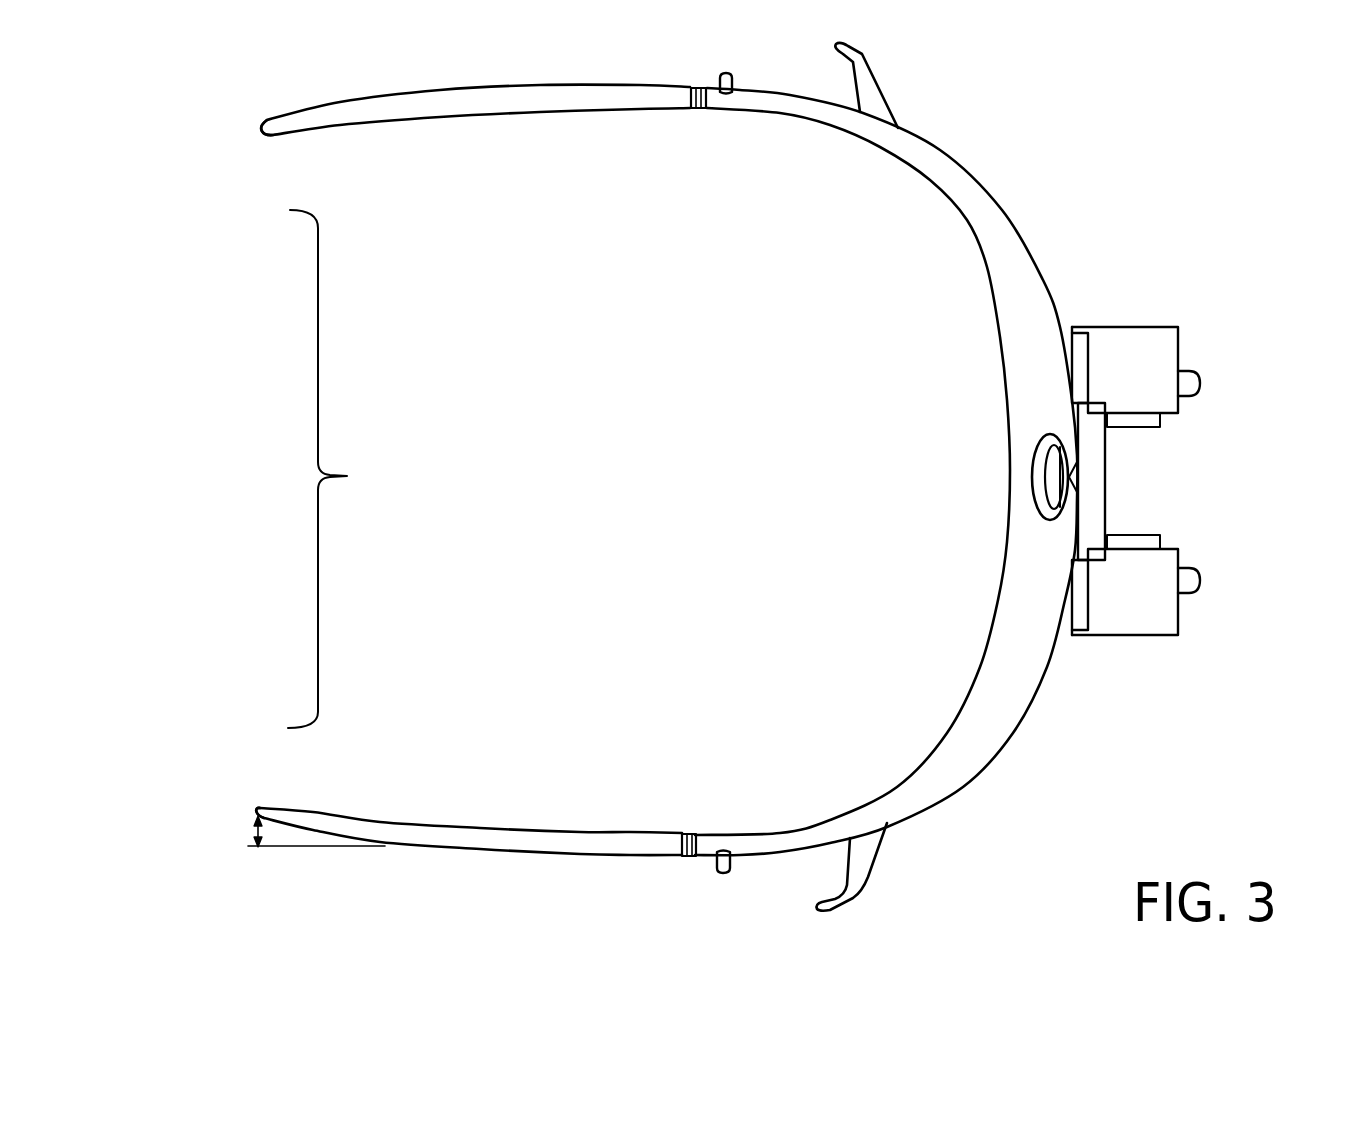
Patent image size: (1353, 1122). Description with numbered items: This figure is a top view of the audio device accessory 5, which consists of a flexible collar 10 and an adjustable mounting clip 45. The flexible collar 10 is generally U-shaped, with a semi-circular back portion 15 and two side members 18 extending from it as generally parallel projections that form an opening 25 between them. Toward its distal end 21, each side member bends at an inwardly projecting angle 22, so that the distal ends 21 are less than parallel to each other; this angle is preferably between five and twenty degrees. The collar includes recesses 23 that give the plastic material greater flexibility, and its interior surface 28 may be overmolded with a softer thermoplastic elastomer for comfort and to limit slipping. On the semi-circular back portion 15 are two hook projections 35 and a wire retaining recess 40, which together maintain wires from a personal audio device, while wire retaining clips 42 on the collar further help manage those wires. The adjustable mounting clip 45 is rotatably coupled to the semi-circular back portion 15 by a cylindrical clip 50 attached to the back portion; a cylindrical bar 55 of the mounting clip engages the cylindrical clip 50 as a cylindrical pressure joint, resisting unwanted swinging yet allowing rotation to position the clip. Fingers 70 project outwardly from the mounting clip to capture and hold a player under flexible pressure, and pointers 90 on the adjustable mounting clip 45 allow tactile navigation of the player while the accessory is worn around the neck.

The audio device accessory 5 is at (1156, 113).
The flexible collar 10 is at (1017, 104).
The semi-circular back portion 15 is at (1001, 211).
The side members 18 is at (473, 470).
The distal ends 21 is at (299, 137).
The inwardly projecting angle 22 is at (252, 828).
The recesses 23 is at (695, 90).
The opening 25 is at (350, 476).
The interior surface 28 is at (492, 113).
The hook projections 35 is at (883, 83).
The wire retaining recess 40 is at (1040, 472).
The wire retaining clips 42 is at (733, 75).
The adjustable mounting clip 45 is at (1205, 279).
The cylindrical clip 50 is at (1093, 480).
The cylindrical bar 55 is at (1066, 327).
The fingers 70 is at (1122, 327).
The pointers 90 is at (1201, 383).